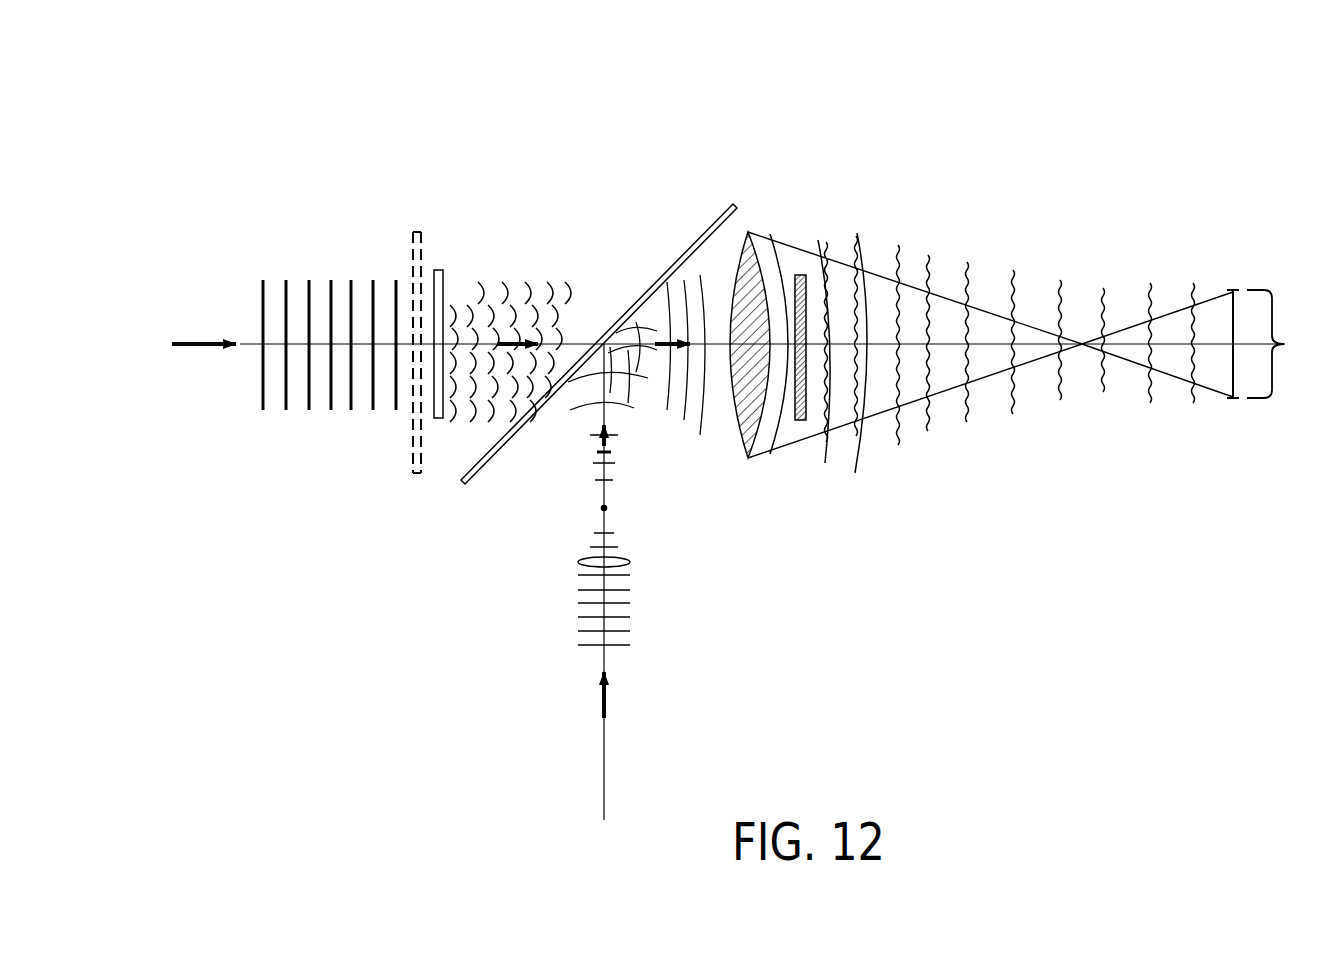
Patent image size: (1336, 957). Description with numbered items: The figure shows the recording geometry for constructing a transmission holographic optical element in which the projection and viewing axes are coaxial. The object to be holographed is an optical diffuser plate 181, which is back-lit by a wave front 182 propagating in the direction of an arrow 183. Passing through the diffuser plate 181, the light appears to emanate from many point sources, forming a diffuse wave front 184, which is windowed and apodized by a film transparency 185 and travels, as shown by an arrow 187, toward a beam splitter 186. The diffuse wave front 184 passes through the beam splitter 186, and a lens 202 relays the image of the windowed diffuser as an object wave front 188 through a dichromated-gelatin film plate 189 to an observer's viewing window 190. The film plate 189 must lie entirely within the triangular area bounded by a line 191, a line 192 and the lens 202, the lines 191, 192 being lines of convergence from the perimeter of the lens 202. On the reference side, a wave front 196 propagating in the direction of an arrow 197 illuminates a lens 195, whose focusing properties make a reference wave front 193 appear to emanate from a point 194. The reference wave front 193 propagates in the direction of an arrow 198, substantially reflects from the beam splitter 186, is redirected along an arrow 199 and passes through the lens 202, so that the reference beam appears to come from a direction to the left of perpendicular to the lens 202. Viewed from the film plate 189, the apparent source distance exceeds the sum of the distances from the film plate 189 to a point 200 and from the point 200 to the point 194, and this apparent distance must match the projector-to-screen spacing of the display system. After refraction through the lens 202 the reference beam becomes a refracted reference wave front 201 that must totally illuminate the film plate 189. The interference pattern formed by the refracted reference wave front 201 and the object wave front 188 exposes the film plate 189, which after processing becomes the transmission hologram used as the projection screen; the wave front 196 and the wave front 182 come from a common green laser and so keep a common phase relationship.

The optical diffuser plate 181 is at (416, 480).
The wave front 182 is at (305, 400).
The arrow 183 is at (194, 354).
The diffuse wave front 184 is at (468, 420).
The film transparency 185 is at (446, 276).
The beam splitter 186 is at (484, 472).
The arrow 187 is at (529, 337).
The object wave front 188 is at (930, 426).
The film plate 189 is at (800, 424).
The observer's viewing window 190 is at (1253, 287).
The line 191 is at (1033, 328).
The line 192 is at (991, 381).
The reference wave front 193 is at (590, 440).
The point 194 is at (615, 509).
The lens 195 is at (635, 563).
The wave front 196 is at (633, 633).
The arrow 197 is at (613, 703).
The arrow 198 is at (617, 449).
The arrow 199 is at (679, 338).
The point 200 is at (604, 338).
The refracted reference wave front 201 is at (783, 262).
The lens 202 is at (760, 238).